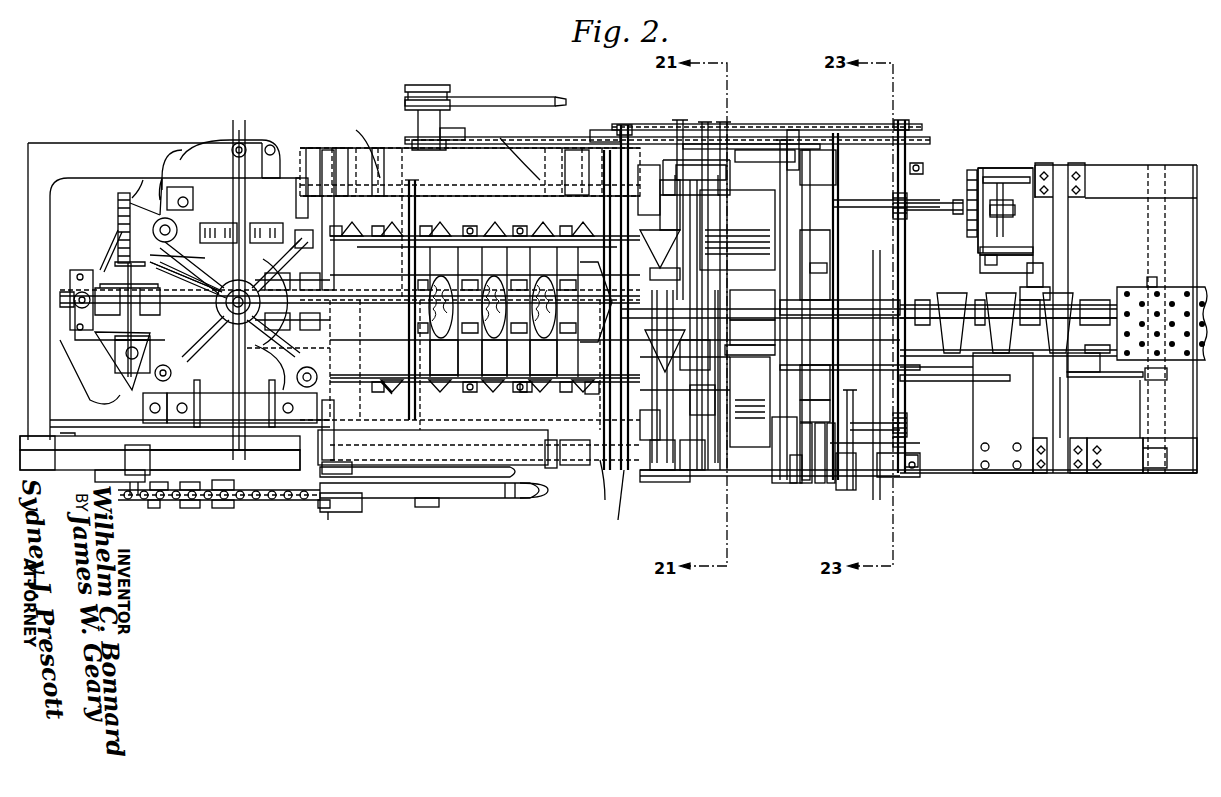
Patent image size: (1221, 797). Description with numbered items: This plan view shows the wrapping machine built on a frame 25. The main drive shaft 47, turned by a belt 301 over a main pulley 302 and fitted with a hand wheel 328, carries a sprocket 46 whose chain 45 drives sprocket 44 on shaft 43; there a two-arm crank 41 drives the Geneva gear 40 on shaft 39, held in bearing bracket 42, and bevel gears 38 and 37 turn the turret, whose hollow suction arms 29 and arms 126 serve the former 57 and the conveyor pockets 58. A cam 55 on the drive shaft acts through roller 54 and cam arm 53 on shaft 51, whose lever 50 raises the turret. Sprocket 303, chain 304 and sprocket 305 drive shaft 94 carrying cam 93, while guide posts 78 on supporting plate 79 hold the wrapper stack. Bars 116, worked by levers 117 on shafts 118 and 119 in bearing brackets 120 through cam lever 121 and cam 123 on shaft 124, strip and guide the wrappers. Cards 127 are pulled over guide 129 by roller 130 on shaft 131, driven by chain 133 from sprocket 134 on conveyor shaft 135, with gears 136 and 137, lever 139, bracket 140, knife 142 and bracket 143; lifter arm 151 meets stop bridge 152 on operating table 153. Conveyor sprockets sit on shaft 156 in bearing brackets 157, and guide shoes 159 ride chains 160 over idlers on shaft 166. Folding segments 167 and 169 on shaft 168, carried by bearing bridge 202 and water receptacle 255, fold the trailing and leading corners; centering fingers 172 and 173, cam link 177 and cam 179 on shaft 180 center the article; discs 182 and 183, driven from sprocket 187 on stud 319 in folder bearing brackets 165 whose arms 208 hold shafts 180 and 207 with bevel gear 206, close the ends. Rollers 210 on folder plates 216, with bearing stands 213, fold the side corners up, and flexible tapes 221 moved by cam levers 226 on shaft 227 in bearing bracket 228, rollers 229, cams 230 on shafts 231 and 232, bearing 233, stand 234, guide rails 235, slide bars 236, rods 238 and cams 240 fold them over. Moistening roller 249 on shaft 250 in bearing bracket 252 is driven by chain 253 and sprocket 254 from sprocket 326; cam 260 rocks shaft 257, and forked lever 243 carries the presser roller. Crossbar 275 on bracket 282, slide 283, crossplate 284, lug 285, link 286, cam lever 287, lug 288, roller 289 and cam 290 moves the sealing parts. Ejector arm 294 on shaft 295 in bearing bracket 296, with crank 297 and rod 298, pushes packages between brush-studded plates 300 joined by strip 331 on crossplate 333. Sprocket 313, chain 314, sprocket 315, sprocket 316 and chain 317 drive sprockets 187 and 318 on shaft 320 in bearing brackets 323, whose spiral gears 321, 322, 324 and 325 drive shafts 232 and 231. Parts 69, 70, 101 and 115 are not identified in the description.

The frame 25 is at (112, 136).
The bracket 29 is at (283, 382).
The wheel 37 is at (241, 321).
The arm 38 is at (185, 271).
The slide 39 is at (218, 224).
The slide 40 is at (266, 224).
The link 41 is at (279, 265).
The arm 42 is at (192, 266).
The post 43 is at (300, 150).
The link 44 is at (298, 242).
The bearing 45 is at (346, 213).
The bearing 46 is at (415, 232).
The gear 47 is at (435, 97).
The cam 50 is at (269, 302).
The bar 51 is at (342, 305).
The rail 53 is at (465, 462).
The rod 54 is at (417, 472).
The rod 55 is at (432, 482).
The bracket 57 is at (143, 407).
The block 58 is at (1083, 363).
The lever 69 is at (165, 201).
The lever 70 is at (145, 187).
The spring 78 is at (118, 232).
The link 79 is at (105, 262).
The rod 93 is at (186, 278).
The bracket 94 is at (184, 215).
The block 101 is at (248, 350).
The arm 115 is at (125, 336).
The bearing 116 is at (492, 312).
The bearing 117 is at (477, 311).
The post 118 is at (380, 160).
The block 119 is at (574, 325).
The bracket 120 is at (473, 296).
The block 121 is at (602, 408).
The plate 123 is at (665, 467).
The post 124 is at (624, 124).
The block 126 is at (149, 248).
The block 127 is at (499, 357).
The rail 129 is at (36, 436).
The rail 130 is at (160, 460).
The bracket 131 is at (140, 500).
The chain 133 is at (280, 502).
The bracket 134 is at (332, 512).
The post 135 is at (310, 148).
The sprocket 136 is at (160, 492).
The sprocket 137 is at (150, 508).
The bracket 139 is at (195, 508).
The bracket 140 is at (195, 490).
The bracket 142 is at (232, 488).
The bracket 143 is at (235, 506).
The lever 151 is at (233, 130).
The rod 152 is at (416, 190).
The post 153 is at (340, 300).
The post 156 is at (1062, 410).
The post 157 is at (1072, 163).
The cam 159 is at (474, 312).
The cam 160 is at (511, 306).
The block 165 is at (695, 470).
The rod 166 is at (520, 294).
The block 167 is at (575, 350).
The cylinder 168 is at (492, 307).
The cam 169 is at (584, 302).
The cam 172 is at (667, 351).
The cam 173 is at (665, 249).
The block 177 is at (660, 470).
The block 179 is at (650, 440).
The block 180 is at (691, 400).
The block 182 is at (704, 365).
The block 183 is at (669, 270).
The bracket 187 is at (726, 122).
The rod 202 is at (614, 499).
The plate 206 is at (735, 400).
The bracket 207 is at (680, 206).
The bracket 208 is at (677, 205).
The slide 210 is at (738, 332).
The block 213 is at (792, 480).
The housing 216 is at (735, 447).
The block 221 is at (827, 268).
The block 226 is at (848, 490).
The block 227 is at (820, 483).
The rail 228 is at (928, 473).
The rod 229 is at (876, 500).
The rod 230 is at (856, 248).
The rod 231 is at (820, 430).
The gear 232 is at (921, 212).
The block 233 is at (1015, 212).
The housing 234 is at (1033, 232).
The block 235 is at (806, 483).
The block 236 is at (820, 414).
The block 238 is at (831, 483).
The block 240 is at (775, 480).
The bar 243 is at (850, 395).
The block 249 is at (752, 332).
The rod 250 is at (782, 185).
The block 252 is at (812, 150).
The bar 253 is at (765, 144).
The bracket 254 is at (793, 130).
The block 255 is at (752, 304).
The bar 257 is at (936, 367).
The bracket 260 is at (790, 140).
The block 275 is at (1050, 292).
The block 282 is at (1043, 275).
The housing 283 is at (980, 268).
The block 284 is at (1012, 473).
The plate 285 is at (1033, 250).
The block 286 is at (985, 258).
The post 287 is at (981, 168).
The bracket 288 is at (1010, 177).
The block 289 is at (990, 215).
The rod 290 is at (972, 170).
The bar 294 is at (1128, 393).
The post 295 is at (1160, 420).
The block 296 is at (1165, 460).
The rod 297 is at (1140, 385).
The bar 298 is at (950, 383).
The perforated plate 300 is at (1168, 287).
The bar end 301 is at (550, 102).
The bar 302 is at (455, 106).
The block 303 is at (455, 357).
The roller 304 is at (236, 372).
The bracket 305 is at (143, 368).
The block 313 is at (457, 130).
The rack 314 is at (667, 132).
The block 315 is at (604, 131).
The post 316 is at (680, 120).
The rack 317 is at (858, 124).
The post 318 is at (903, 120).
The post 319 is at (706, 122).
The bracket 320 is at (912, 135).
The rod 321 is at (958, 200).
The bar 322 is at (965, 200).
The bracket 323 is at (927, 304).
The gear 324 is at (908, 425).
The block 325 is at (906, 440).
The block 326 is at (676, 144).
The rod end 328 is at (548, 490).
The block 331 is at (1152, 277).
The block 333 is at (1136, 473).